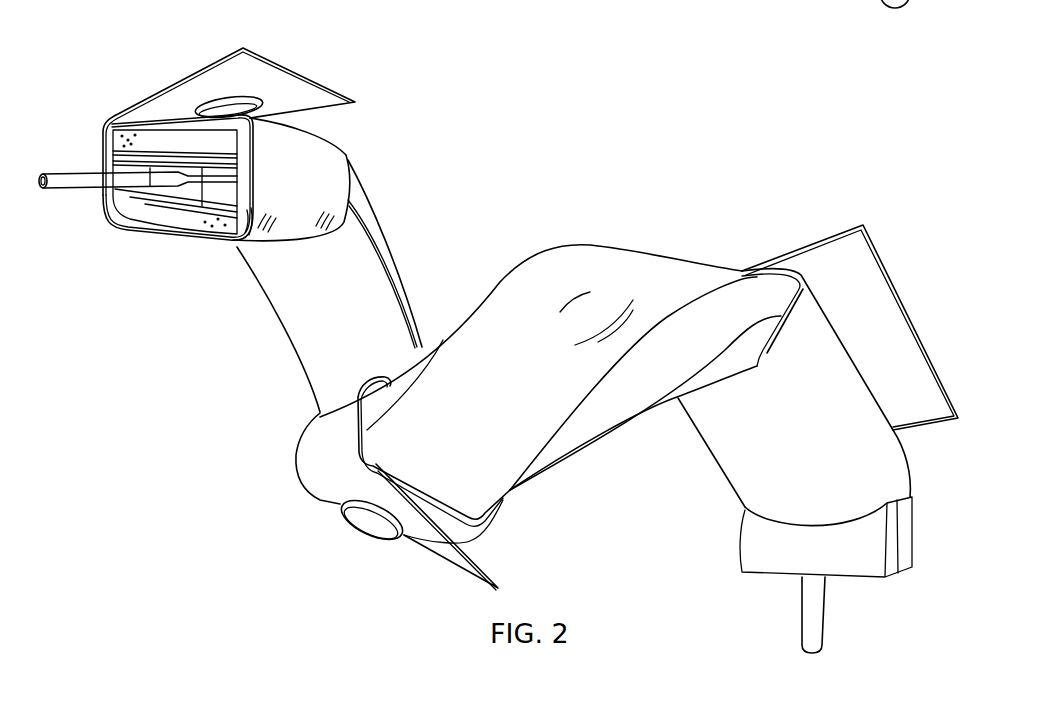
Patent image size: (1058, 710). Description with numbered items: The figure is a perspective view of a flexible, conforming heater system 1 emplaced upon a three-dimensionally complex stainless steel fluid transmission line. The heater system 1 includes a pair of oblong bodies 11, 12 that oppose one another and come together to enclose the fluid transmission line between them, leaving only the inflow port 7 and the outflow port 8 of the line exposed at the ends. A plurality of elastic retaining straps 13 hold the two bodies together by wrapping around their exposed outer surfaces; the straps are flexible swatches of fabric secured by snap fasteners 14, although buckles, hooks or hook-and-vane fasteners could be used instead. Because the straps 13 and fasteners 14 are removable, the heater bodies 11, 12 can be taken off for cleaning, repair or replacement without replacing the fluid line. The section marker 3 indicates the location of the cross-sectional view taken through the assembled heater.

The heater system 1 is at (693, 187).
The section line 3- 3 is at (500, 282).
The inflow port 7 is at (50, 169).
The outflow port 8 is at (800, 650).
The oblong body 11 is at (363, 190).
The oblong body 12 is at (375, 233).
The elastic retaining strap 13 is at (320, 82).
The snap fastener 14 is at (221, 97).